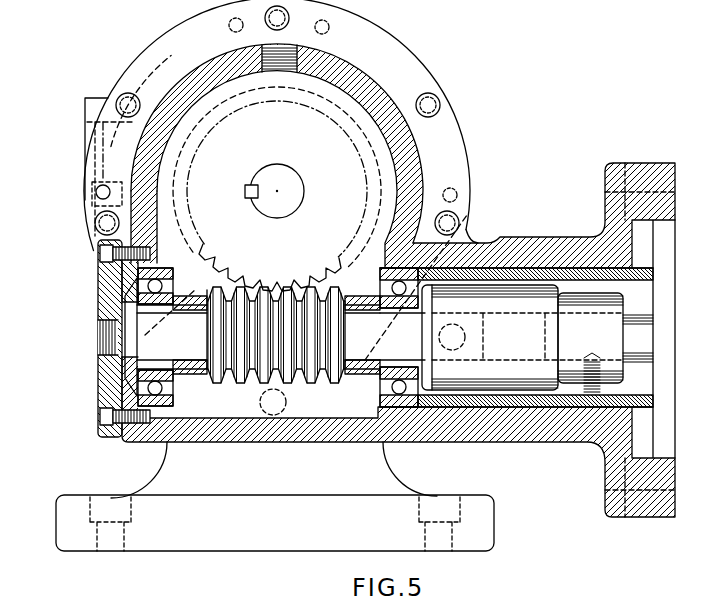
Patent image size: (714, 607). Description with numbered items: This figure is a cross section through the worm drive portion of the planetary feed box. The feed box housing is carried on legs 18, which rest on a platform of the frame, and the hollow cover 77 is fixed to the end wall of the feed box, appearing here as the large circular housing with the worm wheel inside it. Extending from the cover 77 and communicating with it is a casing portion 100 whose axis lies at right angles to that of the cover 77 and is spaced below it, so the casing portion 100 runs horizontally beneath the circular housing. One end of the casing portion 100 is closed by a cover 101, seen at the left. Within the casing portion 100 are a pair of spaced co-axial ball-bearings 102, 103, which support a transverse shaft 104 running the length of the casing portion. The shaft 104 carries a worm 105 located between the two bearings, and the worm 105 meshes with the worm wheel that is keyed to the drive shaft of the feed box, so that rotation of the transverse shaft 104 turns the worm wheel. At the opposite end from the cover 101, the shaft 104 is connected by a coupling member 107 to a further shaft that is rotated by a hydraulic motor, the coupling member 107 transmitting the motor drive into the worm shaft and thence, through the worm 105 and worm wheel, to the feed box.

The hollow cover 77 is at (357, 82).
The casing portion 100 is at (552, 428).
The cover 101 is at (100, 372).
The ball-bearing 102 is at (98, 297).
The ball-bearing 103 is at (400, 392).
The transverse shaft 104 is at (135, 358).
The worm 105 is at (265, 287).
The coupling member 107 is at (521, 297).
The legs 18 is at (283, 533).